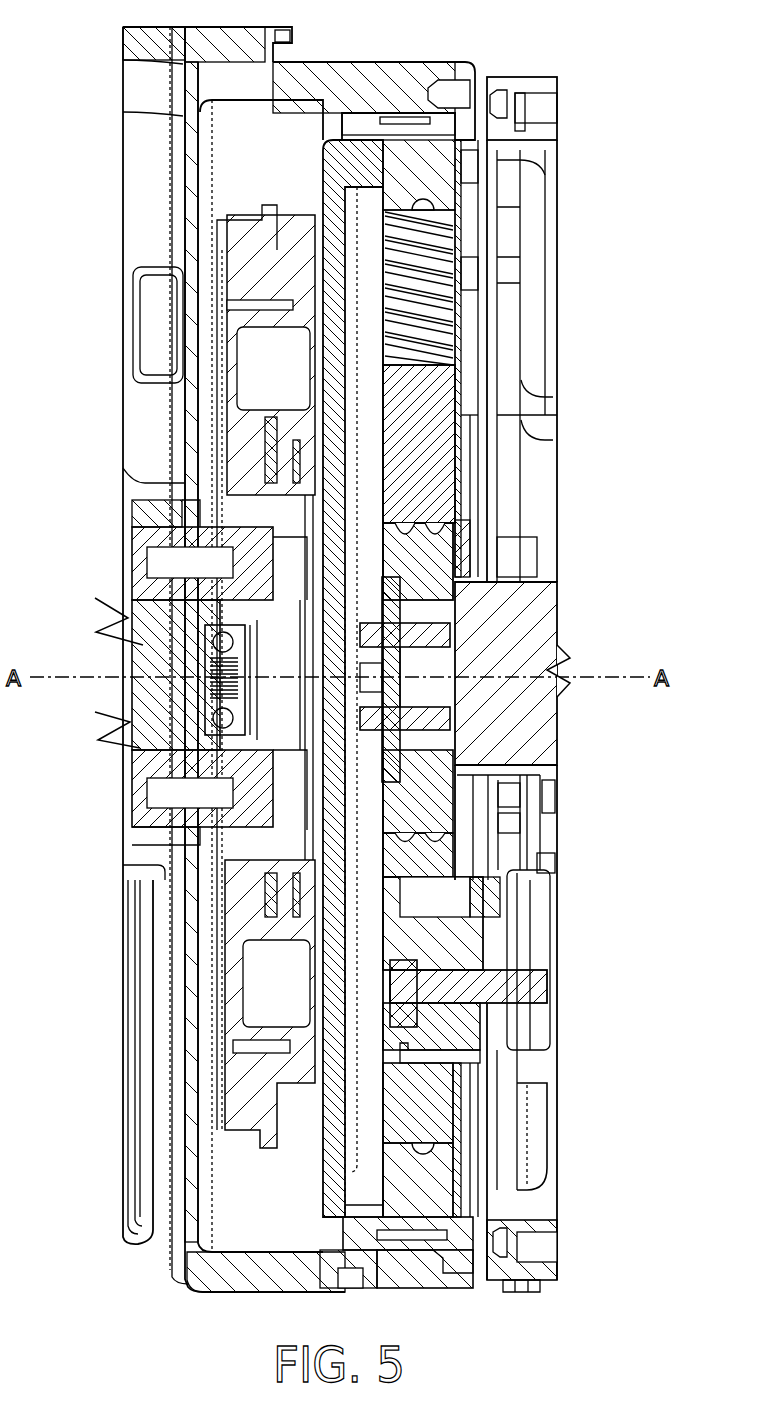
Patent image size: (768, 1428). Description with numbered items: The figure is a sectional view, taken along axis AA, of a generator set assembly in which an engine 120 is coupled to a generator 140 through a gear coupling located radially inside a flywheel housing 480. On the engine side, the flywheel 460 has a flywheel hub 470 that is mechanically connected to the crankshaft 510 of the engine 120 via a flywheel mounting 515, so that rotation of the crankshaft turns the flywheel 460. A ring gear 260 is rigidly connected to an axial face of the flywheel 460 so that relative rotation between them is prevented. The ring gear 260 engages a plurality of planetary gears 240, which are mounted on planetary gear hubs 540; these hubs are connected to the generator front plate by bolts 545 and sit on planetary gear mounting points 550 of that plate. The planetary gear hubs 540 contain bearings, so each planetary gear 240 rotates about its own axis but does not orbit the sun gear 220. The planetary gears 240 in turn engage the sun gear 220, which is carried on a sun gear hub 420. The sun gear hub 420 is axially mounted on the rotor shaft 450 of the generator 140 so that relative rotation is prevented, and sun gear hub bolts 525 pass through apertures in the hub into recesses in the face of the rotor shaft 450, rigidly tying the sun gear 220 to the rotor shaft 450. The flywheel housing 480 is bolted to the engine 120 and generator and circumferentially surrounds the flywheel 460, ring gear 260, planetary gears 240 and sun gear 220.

The engine 120 is at (137, 45).
The generator 140 is at (533, 333).
The sun gear 220 is at (455, 550).
The planetary gears 240 is at (463, 413).
The ring gear 260 is at (457, 262).
The sun gear hub 420 is at (430, 665).
The rotor shaft 450 is at (520, 652).
The flywheel 460 is at (330, 190).
The flywheel hub 470 is at (210, 713).
The flywheel housing 480 is at (372, 78).
The crankshaft 510 is at (127, 617).
The flywheel mounting 515 is at (178, 687).
The sun gear hub bolts 525 is at (420, 613).
The planetary gear hubs 540 is at (448, 950).
The bolts 545 is at (493, 988).
The planetary gear mounting points 550 is at (495, 1073).